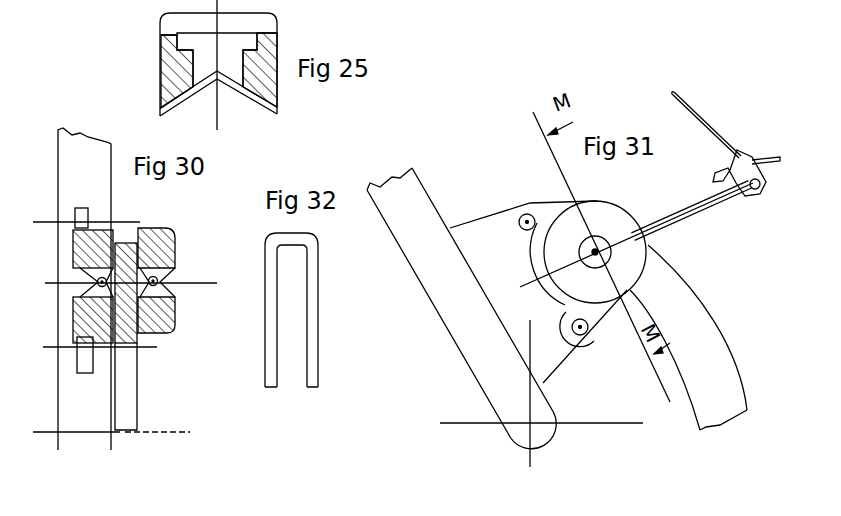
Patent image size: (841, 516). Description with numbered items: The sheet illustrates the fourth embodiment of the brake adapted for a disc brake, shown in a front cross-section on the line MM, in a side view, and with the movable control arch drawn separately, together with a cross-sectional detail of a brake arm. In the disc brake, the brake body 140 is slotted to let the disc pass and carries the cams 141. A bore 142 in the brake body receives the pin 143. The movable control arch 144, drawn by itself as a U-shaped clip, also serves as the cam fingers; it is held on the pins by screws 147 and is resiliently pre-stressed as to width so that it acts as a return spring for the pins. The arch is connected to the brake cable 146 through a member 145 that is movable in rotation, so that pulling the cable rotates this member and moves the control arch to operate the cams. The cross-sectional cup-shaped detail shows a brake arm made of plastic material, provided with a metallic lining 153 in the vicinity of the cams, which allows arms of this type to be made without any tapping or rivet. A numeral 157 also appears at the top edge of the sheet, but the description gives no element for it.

In FIG. 25, the metallic lining 153 is at (160, 113).
In FIG. 31, the component 157 is at (639, 11).
In FIG. 30, the brake body 140 is at (173, 328).
In FIG. 30, the cams 141 is at (150, 322).
In FIG. 30, the bore 142 is at (180, 306).
In FIG. 30, the pin 143 is at (167, 277).
In FIG. 30, the screws 147 is at (173, 283).
In FIG. 32, the movable control arch 144 is at (322, 378).
In FIG. 31, the movable control arch 144 is at (690, 210).
In FIG. 31, the member movable in rotation 145 is at (748, 150).
In FIG. 31, the brake cable 146 is at (685, 100).